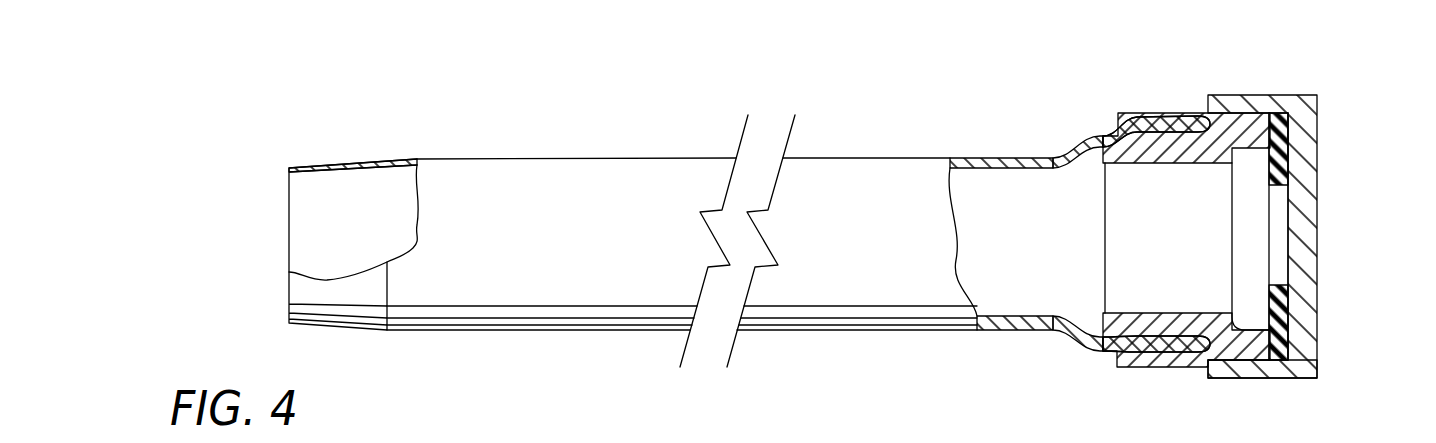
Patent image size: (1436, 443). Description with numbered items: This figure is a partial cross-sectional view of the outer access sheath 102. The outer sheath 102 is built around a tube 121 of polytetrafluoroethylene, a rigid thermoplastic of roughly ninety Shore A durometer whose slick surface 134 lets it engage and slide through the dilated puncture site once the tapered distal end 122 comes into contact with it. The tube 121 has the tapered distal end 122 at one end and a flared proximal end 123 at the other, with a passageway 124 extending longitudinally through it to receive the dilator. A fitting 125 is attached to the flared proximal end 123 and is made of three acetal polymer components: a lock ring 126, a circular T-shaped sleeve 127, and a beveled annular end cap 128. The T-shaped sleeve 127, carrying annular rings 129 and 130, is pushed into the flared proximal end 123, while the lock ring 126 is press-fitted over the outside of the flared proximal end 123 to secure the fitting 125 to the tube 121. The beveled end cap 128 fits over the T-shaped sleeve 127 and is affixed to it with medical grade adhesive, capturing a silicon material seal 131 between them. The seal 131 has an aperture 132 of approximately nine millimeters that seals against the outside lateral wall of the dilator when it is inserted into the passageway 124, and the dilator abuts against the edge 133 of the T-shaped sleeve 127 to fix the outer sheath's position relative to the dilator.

The outer sheath 102 is at (878, 369).
The tube 121 is at (480, 160).
The tapered distal end 122 is at (315, 163).
The flared proximal end 123 is at (1082, 142).
The passageway 124 is at (980, 177).
The fitting 125 is at (1258, 58).
The lock ring 126 is at (1160, 367).
The T-shaped sleeve 127 is at (1245, 372).
The beveled annular end cap 128 is at (1286, 93).
The annular ring 129 is at (1118, 130).
The annular ring 130 is at (1150, 118).
The silicon material seal 131 is at (1288, 166).
The aperture 132 is at (1283, 268).
The edge 133 is at (1236, 150).
The slick surface 134 is at (568, 170).